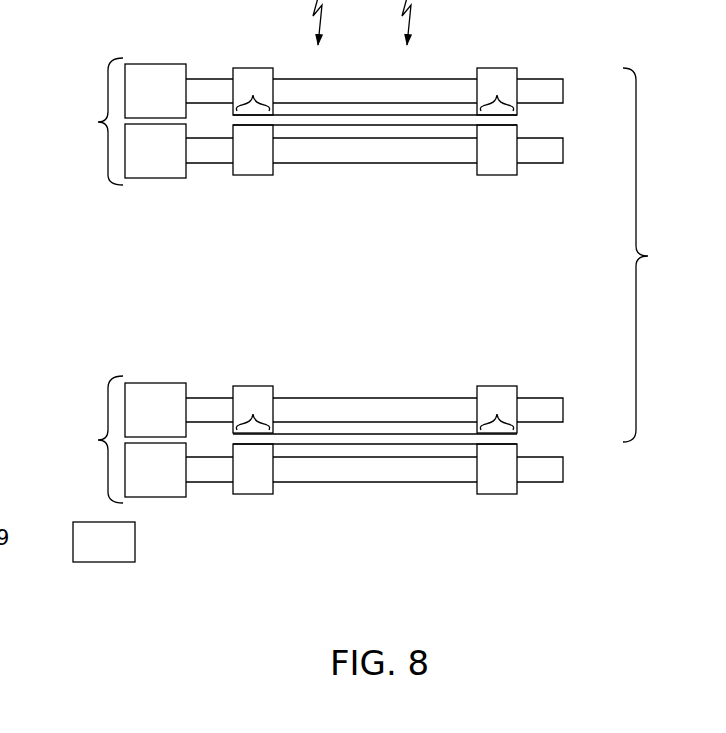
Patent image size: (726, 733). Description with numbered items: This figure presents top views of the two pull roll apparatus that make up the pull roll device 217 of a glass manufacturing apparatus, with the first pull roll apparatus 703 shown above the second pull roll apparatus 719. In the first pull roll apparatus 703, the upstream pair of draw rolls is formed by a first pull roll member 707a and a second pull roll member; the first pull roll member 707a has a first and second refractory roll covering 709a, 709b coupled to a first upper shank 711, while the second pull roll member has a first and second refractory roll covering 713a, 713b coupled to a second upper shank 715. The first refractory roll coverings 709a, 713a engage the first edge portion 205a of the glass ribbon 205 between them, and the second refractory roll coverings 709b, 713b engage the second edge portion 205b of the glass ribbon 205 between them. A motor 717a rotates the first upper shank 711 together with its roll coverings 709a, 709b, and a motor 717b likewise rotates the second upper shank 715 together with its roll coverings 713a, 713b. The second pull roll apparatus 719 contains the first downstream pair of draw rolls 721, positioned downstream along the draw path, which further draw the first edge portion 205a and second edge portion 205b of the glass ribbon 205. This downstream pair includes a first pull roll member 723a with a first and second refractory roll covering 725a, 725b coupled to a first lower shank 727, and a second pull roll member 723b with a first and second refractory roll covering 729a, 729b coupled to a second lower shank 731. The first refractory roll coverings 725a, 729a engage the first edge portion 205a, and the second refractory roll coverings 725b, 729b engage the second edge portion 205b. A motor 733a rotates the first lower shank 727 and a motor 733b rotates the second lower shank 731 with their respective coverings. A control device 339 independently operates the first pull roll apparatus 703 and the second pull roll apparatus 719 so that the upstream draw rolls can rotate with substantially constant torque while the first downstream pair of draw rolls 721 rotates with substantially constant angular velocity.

The pull roll device 217 is at (656, 255).
The first pull roll apparatus 703 is at (98, 122).
The second pull roll apparatus 719 is at (98, 440).
The motor 717a is at (157, 179).
The motor 717b is at (147, 63).
The first refractory roll covering 713a is at (242, 67).
The second refractory roll covering 713b is at (507, 67).
The first refractory roll covering 709a is at (257, 176).
The second refractory roll covering 709b is at (497, 176).
The glass ribbon 205 is at (412, 123).
The first edge portion 205a is at (253, 95).
The second edge portion 205b is at (497, 95).
The second upper shank 715 is at (337, 78).
The first upper shank 711 is at (430, 164).
The first pull roll member 707a is at (365, 165).
The motor 733a is at (172, 498).
The motor 733b is at (145, 382).
The first refractory roll covering 729a is at (240, 385).
The second refractory roll covering 729b is at (508, 385).
The first refractory roll covering 725a is at (255, 495).
The second refractory roll covering 725b is at (498, 495).
The second lower shank 731 is at (340, 397).
The first lower shank 727 is at (428, 483).
The first pull roll member 723a is at (323, 486).
The second pull roll member 723b is at (393, 369).
The first downstream pair of draw rolls 721 is at (379, 486).
The control device 339 is at (105, 563).